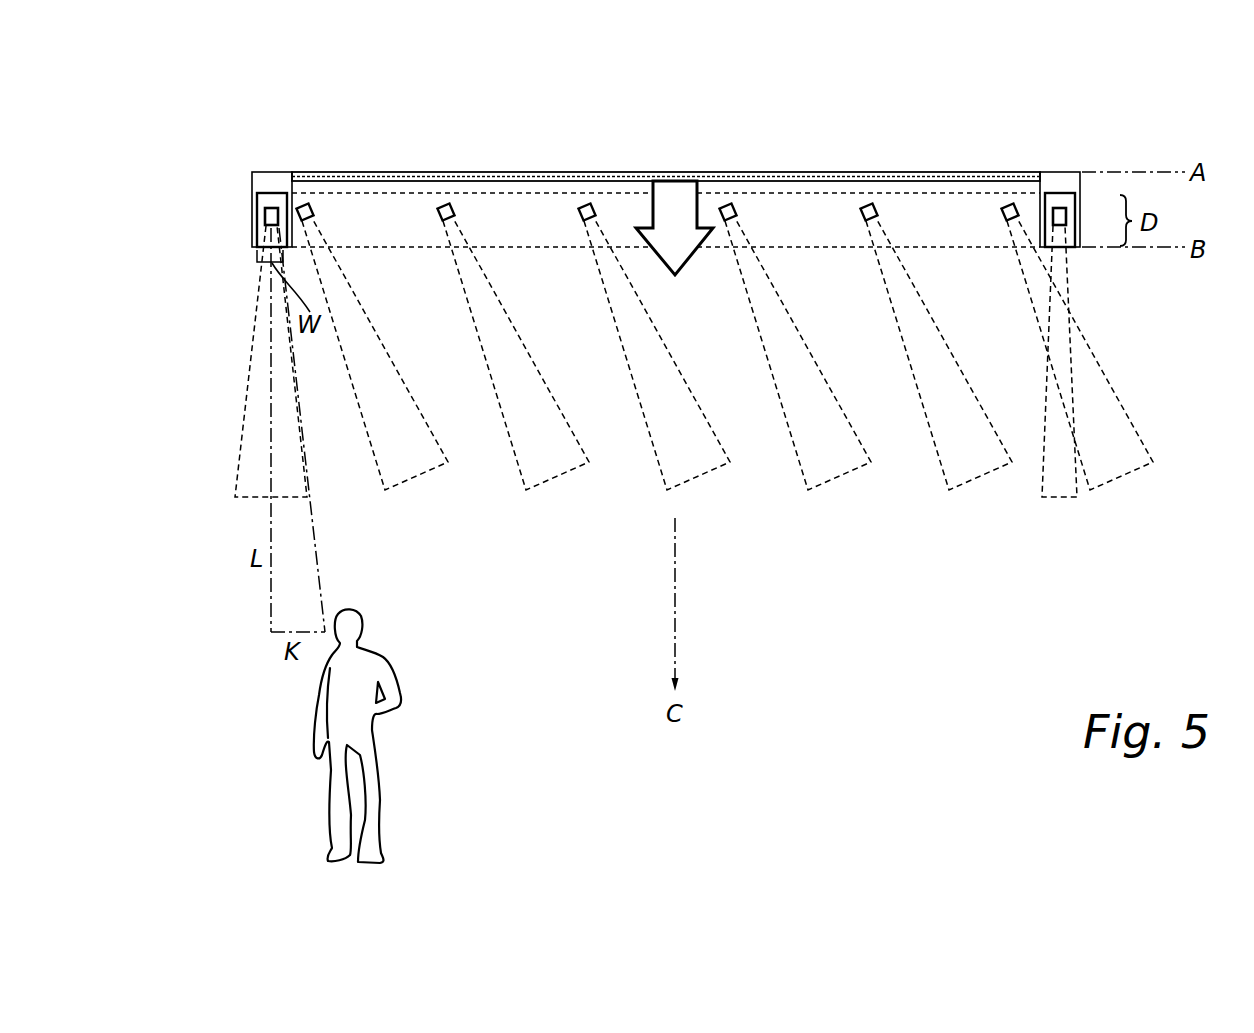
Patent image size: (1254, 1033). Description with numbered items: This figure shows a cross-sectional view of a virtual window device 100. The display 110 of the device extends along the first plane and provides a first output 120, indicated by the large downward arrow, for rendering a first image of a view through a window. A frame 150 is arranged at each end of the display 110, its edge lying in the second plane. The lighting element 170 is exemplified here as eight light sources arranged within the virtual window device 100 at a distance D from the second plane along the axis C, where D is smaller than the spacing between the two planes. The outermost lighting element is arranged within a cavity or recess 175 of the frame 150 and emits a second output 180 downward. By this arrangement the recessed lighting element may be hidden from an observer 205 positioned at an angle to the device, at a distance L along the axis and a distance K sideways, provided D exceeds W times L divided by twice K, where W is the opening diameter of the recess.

The virtual window device 100 is at (625, 153).
The display 110 is at (908, 172).
The first output 120 is at (683, 210).
The frame 150 is at (226, 223).
The lighting element 170 is at (460, 203).
The cavity or recess 175 is at (262, 225).
The second output 180 is at (257, 447).
The observer 205 is at (366, 731).